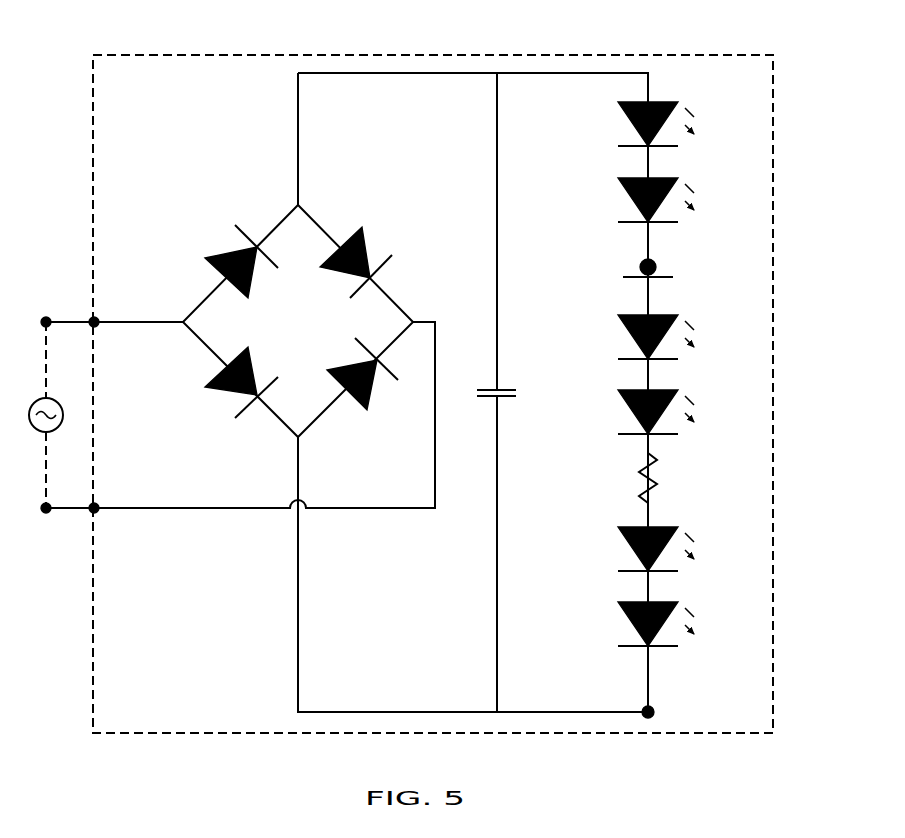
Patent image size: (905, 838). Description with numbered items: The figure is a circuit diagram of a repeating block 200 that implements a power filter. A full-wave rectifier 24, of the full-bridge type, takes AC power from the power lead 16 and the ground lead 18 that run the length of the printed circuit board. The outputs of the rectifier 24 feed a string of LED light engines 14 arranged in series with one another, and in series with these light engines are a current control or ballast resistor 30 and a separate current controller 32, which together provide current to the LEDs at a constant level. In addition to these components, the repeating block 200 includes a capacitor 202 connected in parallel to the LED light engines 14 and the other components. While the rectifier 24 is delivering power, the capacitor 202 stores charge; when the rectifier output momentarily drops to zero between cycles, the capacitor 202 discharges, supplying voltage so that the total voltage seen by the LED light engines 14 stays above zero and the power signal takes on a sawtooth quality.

The LED light engines 14 is at (615, 123).
The power lead 16 is at (70, 322).
The ground lead 18 is at (63, 508).
The full-wave rectifier 24 is at (268, 226).
The ballast resistor 30 is at (654, 456).
The current controller 32 is at (656, 264).
The repeating block 200 is at (732, 52).
The capacitor 202 is at (507, 390).